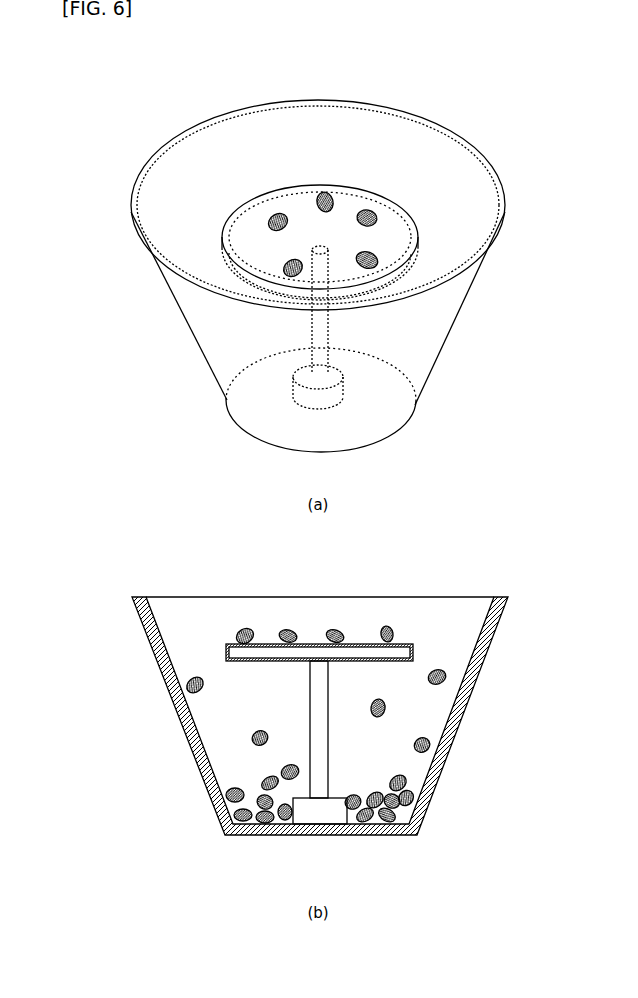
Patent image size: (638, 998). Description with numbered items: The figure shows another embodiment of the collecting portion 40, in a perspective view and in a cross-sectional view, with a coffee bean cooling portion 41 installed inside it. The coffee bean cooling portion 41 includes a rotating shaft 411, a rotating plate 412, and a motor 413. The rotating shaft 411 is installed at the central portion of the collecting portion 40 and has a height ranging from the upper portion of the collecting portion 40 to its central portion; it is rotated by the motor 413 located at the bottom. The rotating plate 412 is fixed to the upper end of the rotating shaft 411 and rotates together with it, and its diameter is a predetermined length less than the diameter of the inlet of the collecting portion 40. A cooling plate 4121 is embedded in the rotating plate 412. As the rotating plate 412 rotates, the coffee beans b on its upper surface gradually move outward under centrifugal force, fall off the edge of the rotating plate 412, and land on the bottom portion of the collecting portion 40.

The collecting portion 40 is at (190, 111).
The coffee bean cooling portion 41 is at (373, 266).
The rotating shaft 411 is at (332, 330).
The rotating plate 412 is at (341, 210).
The cooling plate 4121 is at (266, 644).
The motor 413 is at (330, 405).
The coffee bean b is at (376, 258).